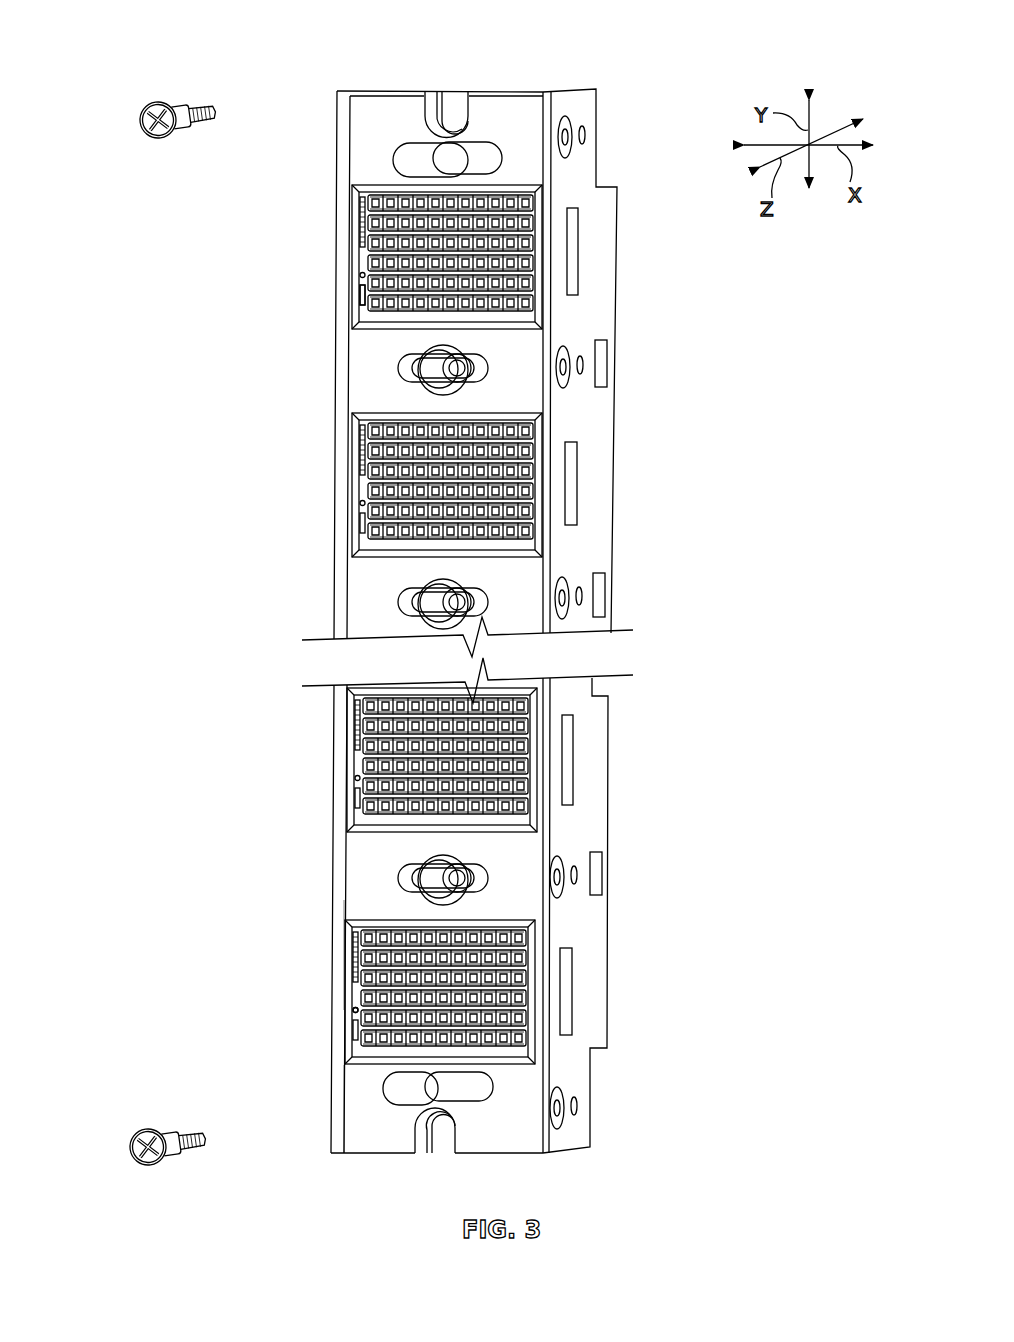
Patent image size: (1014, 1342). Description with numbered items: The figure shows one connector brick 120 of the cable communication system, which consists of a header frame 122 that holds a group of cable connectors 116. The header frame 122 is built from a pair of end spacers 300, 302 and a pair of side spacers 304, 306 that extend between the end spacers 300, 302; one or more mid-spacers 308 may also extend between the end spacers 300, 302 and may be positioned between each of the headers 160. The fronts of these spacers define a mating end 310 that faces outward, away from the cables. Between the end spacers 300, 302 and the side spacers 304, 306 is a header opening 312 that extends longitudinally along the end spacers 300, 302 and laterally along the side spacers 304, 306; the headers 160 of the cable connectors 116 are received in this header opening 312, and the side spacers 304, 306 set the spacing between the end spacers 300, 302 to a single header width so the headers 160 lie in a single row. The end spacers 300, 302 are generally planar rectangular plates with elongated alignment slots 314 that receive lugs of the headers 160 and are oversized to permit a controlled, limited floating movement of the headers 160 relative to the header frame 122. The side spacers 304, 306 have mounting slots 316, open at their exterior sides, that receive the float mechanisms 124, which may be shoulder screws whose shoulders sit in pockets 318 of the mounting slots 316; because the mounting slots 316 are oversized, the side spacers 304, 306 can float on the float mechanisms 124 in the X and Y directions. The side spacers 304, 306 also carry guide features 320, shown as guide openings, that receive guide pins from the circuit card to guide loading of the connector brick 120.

The cable connector 116 is at (378, 255).
The connector brick 120 is at (268, 65).
The header frame 122 is at (600, 82).
The float mechanism 124 is at (133, 99).
The header 160 is at (372, 294).
The end spacer 300 is at (512, 122).
The end spacer 302 is at (488, 1140).
The side spacer 304 is at (592, 977).
The side spacer 306 is at (338, 963).
The mid-spacer 308 is at (365, 880).
The mating end 310 is at (360, 1078).
The header opening 312 is at (348, 1018).
The alignment slot 314 is at (568, 950).
The mounting slot 316 is at (452, 103).
The pocket 318 is at (423, 110).
The guide feature 320 is at (396, 160).